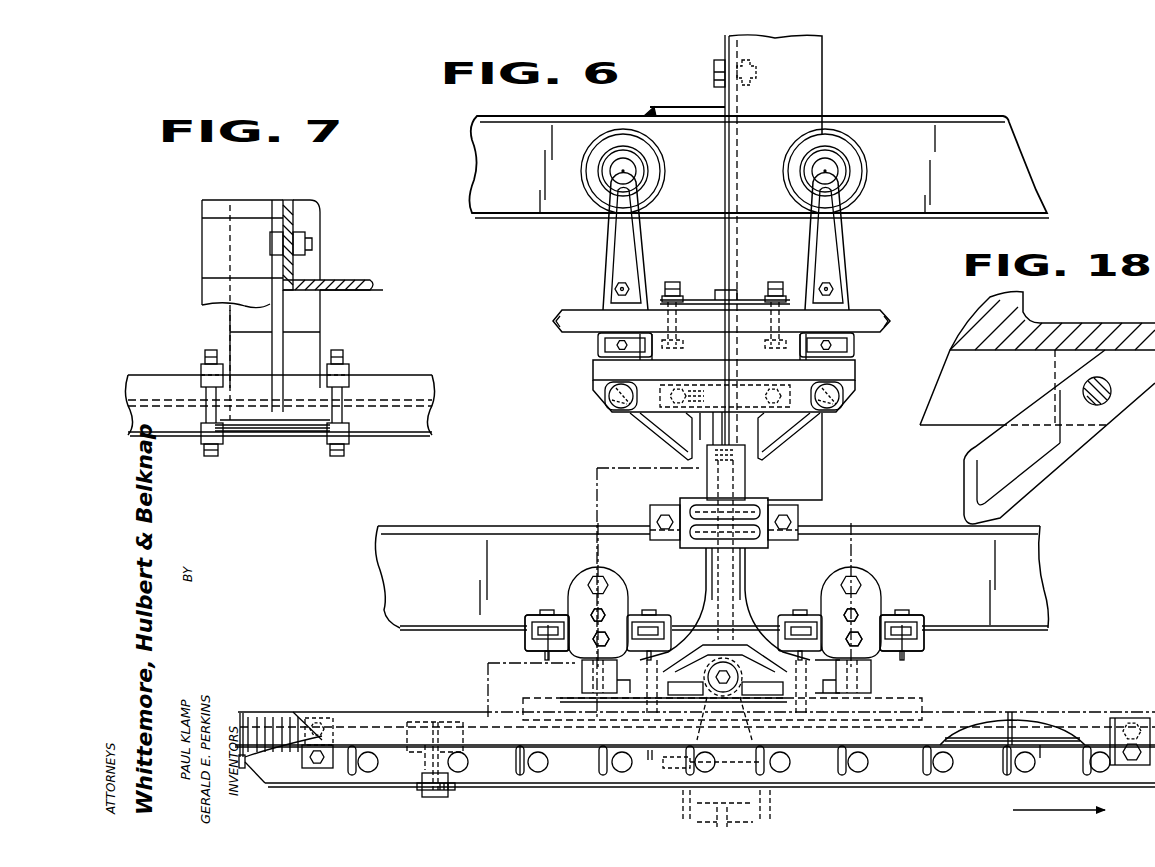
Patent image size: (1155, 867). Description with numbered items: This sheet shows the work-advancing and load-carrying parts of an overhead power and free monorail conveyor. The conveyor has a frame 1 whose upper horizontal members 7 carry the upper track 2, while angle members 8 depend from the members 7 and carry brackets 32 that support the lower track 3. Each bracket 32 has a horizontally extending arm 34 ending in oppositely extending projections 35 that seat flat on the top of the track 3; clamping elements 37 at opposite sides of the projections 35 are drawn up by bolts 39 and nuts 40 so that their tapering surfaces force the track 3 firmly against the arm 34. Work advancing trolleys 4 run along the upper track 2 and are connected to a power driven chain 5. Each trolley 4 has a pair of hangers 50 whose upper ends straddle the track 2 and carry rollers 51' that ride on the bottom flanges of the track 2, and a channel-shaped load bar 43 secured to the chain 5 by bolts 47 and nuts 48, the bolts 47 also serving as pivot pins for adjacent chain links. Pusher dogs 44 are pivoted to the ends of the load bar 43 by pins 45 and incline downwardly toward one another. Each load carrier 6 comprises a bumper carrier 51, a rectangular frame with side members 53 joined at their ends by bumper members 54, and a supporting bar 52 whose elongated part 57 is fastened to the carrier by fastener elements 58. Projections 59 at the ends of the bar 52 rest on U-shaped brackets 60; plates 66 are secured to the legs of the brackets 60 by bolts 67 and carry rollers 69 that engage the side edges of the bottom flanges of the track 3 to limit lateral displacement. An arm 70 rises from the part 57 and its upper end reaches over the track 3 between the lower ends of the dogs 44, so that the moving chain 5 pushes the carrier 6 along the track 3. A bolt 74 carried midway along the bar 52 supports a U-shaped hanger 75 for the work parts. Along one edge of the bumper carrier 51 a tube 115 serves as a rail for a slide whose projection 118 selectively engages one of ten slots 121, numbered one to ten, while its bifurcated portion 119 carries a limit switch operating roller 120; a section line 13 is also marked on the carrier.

In FIG. 6, the frame 1 is at (826, 106).
In FIG. 7, the frame 1 is at (342, 279).
In FIG. 6, the upper track 2 is at (983, 179).
In FIG. 6, the lower track 3 is at (962, 584).
In FIG. 6, the work advancing trolleys 4 is at (599, 243).
In FIG. 6, the power driven chain 5 is at (722, 36).
In FIG. 6, the load carriers 6 is at (755, 606).
In FIG. 6, the upper horizontal members 7 is at (674, 113).
In FIG. 7, the upper horizontal members 7 is at (360, 291).
In FIG. 6, the angle members 8 is at (720, 446).
In FIG. 7, the angle members 8 is at (210, 236).
In FIG. 6, the section line 13 is at (575, 658).
In FIG. 7, the brackets 32 is at (322, 208).
In FIG. 7, the horizontally extending arm 34 is at (322, 336).
In FIG. 7, the projections 35 is at (205, 411).
In FIG. 7, the clamping elements 37 is at (200, 369).
In FIG. 7, the bolts 39 is at (214, 456).
In FIG. 7, the nuts 40 is at (208, 353).
In FIG. 6, the load bar 43 is at (858, 380).
In FIG. 6, the pusher dogs 44 is at (661, 430).
In FIG. 18, the pusher dogs 44 is at (1040, 475).
In FIG. 6, the pins 45 is at (614, 400).
In FIG. 18, the pins 45 is at (1108, 385).
In FIG. 6, the bolts 47 is at (672, 282).
In FIG. 6, the nuts 48 is at (684, 300).
In FIG. 6, the hangers 50 is at (630, 270).
In FIG. 6, the bumper carrier 51 is at (1022, 712).
In FIG. 6, the rollers 51' is at (742, 171).
In FIG. 6, the supporting bar 52 is at (873, 677).
In FIG. 6, the side members 53 is at (340, 772).
In FIG. 6, the bumper members 54 is at (245, 767).
In FIG. 6, the elongated part 57 is at (848, 696).
In FIG. 6, the fastener elements 58 is at (648, 622).
In FIG. 6, the projections 59 is at (627, 652).
In FIG. 6, the U-shaped brackets 60 is at (578, 677).
In FIG. 6, the plates 66 is at (579, 601).
In FIG. 6, the bolts 67 is at (596, 622).
In FIG. 6, the rollers 69 is at (527, 636).
In FIG. 6, the arm 70 is at (740, 578).
In FIG. 6, the bolt 74 is at (724, 668).
In FIG. 6, the U-shaped hanger 75 is at (680, 795).
In FIG. 6, the tube 115 is at (1040, 748).
In FIG. 6, the projection 118 is at (437, 745).
In FIG. 6, the bifurcated portion 119 is at (452, 787).
In FIG. 6, the limit switch operating roller 120 is at (440, 791).
In FIG. 6, the slots 121 is at (420, 770).